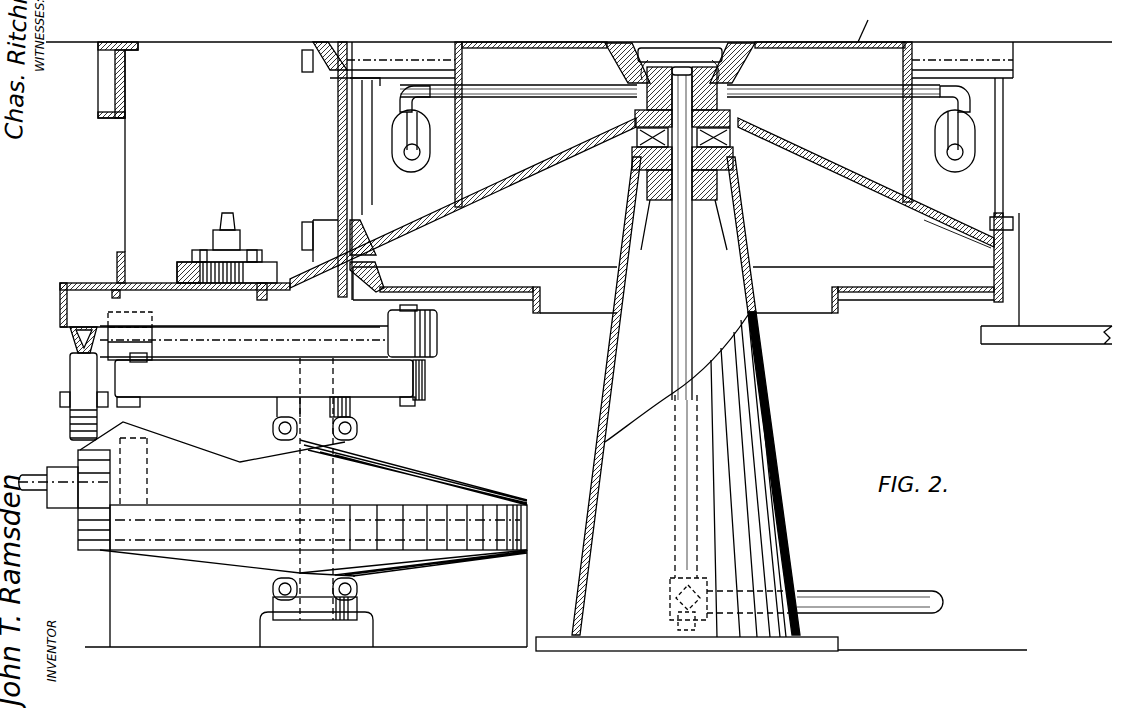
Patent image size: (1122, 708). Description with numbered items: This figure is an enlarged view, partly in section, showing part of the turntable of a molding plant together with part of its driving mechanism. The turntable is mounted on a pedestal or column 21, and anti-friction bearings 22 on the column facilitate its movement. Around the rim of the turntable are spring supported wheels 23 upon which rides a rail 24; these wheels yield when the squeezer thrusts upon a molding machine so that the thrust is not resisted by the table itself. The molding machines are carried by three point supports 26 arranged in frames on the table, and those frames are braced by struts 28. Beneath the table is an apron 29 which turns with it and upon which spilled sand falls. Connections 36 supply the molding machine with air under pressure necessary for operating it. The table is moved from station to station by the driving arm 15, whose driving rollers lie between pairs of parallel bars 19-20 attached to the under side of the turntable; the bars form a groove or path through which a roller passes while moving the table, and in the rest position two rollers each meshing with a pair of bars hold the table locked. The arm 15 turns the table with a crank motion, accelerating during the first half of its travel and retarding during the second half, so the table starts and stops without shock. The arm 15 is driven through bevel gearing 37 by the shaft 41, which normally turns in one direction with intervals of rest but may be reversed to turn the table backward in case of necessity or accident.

The driving arm 15 is at (242, 393).
The parallel bars 19-20 is at (268, 342).
The pedestal or column 21 is at (773, 443).
The anti-friction bearings 22 is at (730, 142).
The spring supported wheels 23 is at (82, 373).
The rail 24 is at (72, 342).
The three point supports 26 is at (230, 217).
The struts 28 is at (422, 45).
The apron 29 is at (533, 287).
The connections 36 is at (780, 86).
The bevel gearing 37 is at (243, 450).
The shaft 41 is at (38, 475).